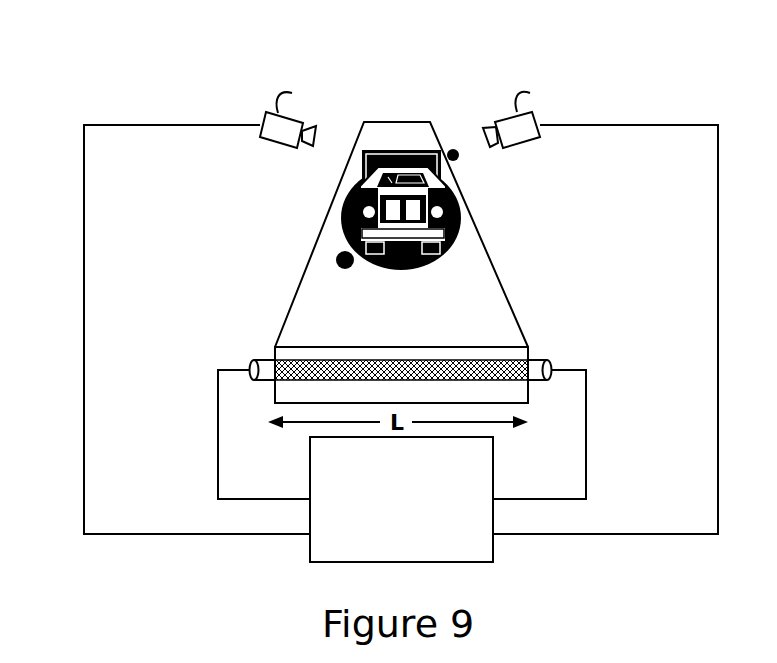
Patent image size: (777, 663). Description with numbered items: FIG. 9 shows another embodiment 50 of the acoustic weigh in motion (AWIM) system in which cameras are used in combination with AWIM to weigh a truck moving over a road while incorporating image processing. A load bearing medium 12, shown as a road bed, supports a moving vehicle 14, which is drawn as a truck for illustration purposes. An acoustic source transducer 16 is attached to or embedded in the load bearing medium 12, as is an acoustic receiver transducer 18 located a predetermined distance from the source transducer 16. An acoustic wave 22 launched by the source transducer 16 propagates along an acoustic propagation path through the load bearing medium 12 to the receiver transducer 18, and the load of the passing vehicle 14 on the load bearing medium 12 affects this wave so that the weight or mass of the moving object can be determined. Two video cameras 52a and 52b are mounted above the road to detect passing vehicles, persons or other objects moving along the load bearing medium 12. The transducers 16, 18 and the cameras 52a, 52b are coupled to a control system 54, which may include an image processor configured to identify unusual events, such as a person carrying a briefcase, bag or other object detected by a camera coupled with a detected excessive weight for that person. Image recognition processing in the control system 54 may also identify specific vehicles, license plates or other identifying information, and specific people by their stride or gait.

The embodiment 50 is at (91, 57).
The load bearing medium 12 is at (306, 233).
The moving vehicle 14 is at (386, 113).
The acoustic source transducer 16 is at (255, 346).
The acoustic receiver transducer 18 is at (553, 349).
The acoustic wave 22 is at (385, 384).
The video camera 52a is at (270, 111).
The video camera 52b is at (530, 114).
The control system 54 is at (495, 468).